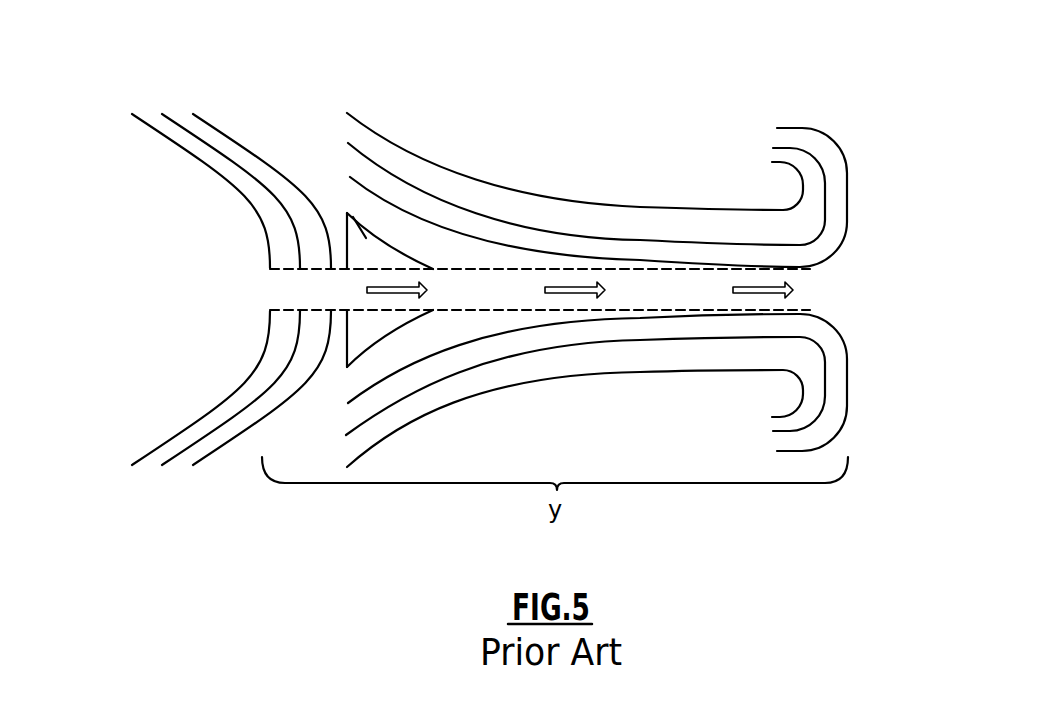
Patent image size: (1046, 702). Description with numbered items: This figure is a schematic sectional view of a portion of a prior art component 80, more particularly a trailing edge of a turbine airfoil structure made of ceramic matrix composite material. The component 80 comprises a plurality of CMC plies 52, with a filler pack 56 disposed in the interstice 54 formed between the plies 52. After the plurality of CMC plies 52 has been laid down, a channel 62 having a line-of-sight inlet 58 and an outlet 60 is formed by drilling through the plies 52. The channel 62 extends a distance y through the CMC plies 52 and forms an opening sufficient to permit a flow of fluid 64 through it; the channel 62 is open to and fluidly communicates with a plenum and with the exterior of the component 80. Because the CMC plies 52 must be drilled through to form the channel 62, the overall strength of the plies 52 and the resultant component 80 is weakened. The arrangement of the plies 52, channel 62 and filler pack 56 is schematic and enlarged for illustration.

The prior art component 80 is at (102, 81).
The CMC plies 52 is at (253, 148).
The filler pack 56 is at (347, 213).
The line-of-sight inlet 58 is at (232, 287).
The interstice 54 is at (401, 221).
The channel 62 is at (530, 269).
The fluid 64 is at (762, 287).
The outlet 60 is at (833, 300).